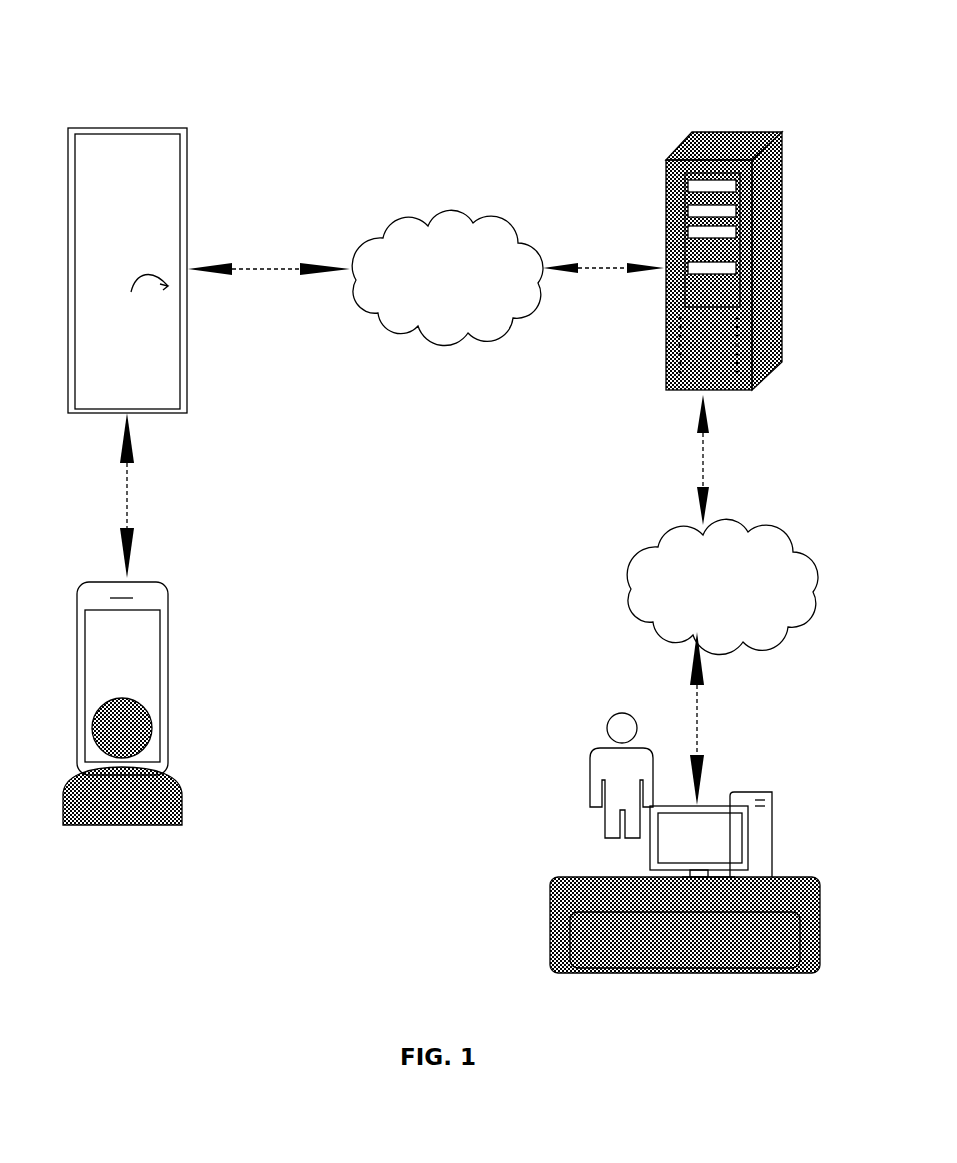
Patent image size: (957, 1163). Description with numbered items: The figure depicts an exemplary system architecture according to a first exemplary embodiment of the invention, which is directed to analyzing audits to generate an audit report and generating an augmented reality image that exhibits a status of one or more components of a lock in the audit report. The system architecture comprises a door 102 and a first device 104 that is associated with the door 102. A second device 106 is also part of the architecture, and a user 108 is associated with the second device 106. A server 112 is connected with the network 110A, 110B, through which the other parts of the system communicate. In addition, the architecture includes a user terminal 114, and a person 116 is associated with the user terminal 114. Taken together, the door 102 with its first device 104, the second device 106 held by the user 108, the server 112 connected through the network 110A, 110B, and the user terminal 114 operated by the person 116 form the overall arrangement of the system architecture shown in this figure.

The door 102 is at (188, 136).
The first device 104 is at (138, 299).
The second device 106 is at (163, 586).
The user 108 is at (182, 787).
The network 110A is at (478, 212).
The network 110B is at (752, 520).
The server 112 is at (735, 122).
The user terminal 114 is at (770, 795).
The person 116 is at (600, 752).